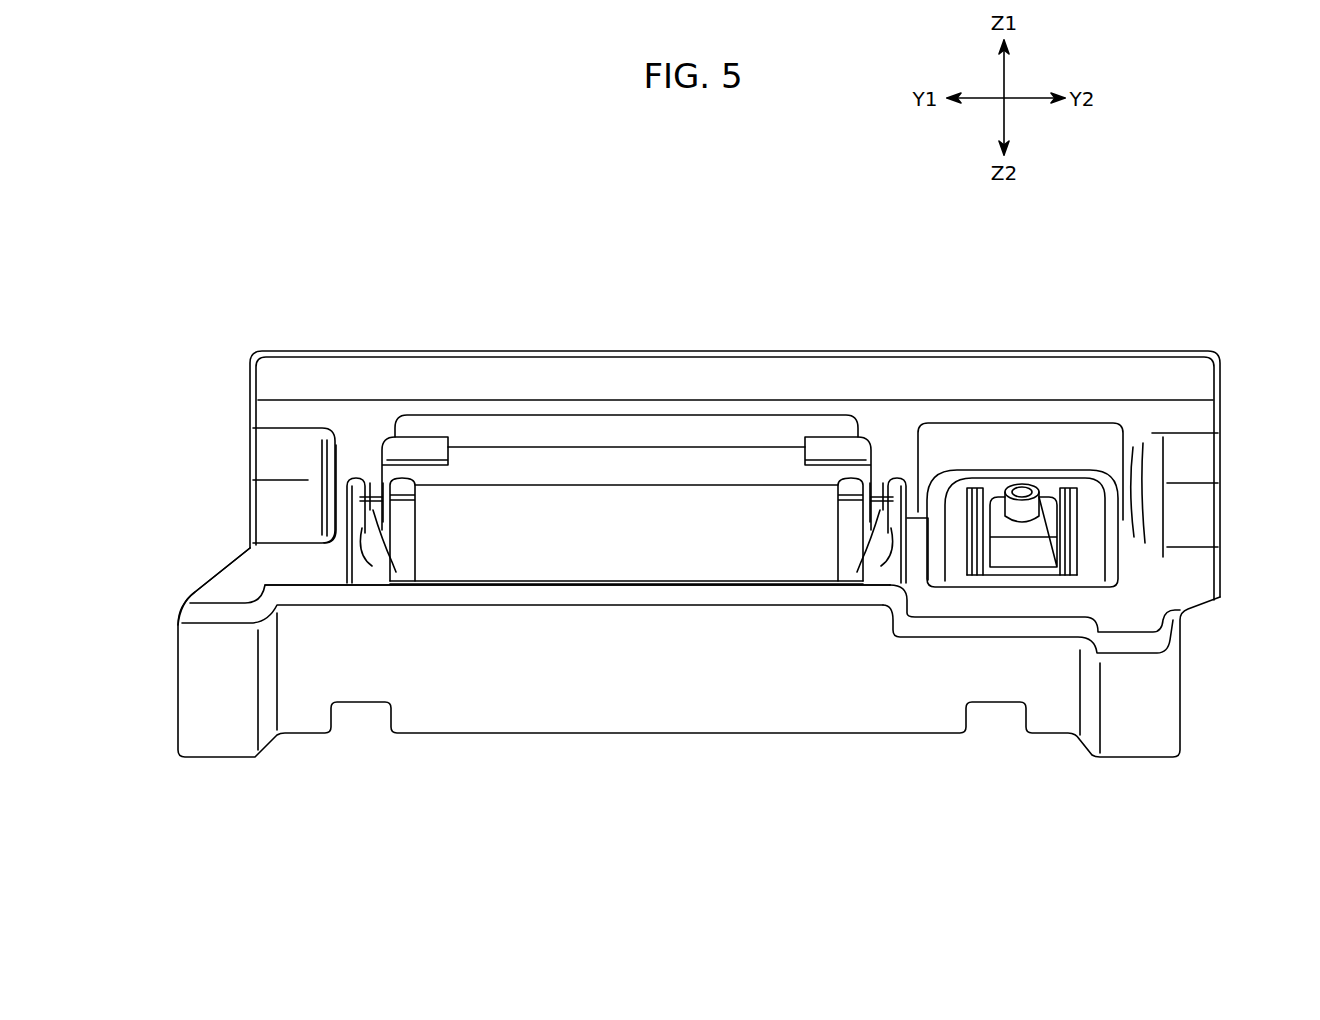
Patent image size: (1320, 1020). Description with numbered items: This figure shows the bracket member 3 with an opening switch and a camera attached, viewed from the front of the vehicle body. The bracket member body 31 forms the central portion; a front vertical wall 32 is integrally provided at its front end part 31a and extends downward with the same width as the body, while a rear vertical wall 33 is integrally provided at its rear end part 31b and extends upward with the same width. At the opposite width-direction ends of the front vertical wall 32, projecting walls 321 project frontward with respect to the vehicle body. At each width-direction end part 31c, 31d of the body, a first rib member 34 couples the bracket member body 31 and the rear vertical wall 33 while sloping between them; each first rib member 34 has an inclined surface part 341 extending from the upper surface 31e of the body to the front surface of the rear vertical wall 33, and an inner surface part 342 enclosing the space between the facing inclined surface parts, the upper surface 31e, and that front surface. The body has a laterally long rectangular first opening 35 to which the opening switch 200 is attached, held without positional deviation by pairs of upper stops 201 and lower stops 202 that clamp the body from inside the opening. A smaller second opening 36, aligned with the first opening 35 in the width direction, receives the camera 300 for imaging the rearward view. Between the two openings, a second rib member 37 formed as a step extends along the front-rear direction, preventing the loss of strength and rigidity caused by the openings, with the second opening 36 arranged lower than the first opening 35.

The bracket member 3 is at (593, 245).
The bracket member body 31 is at (212, 593).
The front end part 31a is at (490, 592).
The rear end part 31b is at (346, 478).
The end part 31c is at (278, 557).
The end part 31d is at (1133, 560).
The upper surface 31e is at (233, 584).
The front vertical wall 32 is at (707, 735).
The projecting wall 321 is at (213, 758).
The rear vertical wall 33 is at (782, 373).
The first rib member 34 is at (318, 274).
The inclined surface part 341 is at (280, 447).
The inner surface part 342 is at (335, 470).
The first opening 35 is at (514, 429).
The second opening 36 is at (966, 508).
The second rib member 37 is at (903, 568).
The opening switch 200 is at (615, 545).
The upper stop 201 is at (372, 465).
The lower stop 202 is at (390, 570).
The camera 300 is at (1040, 480).